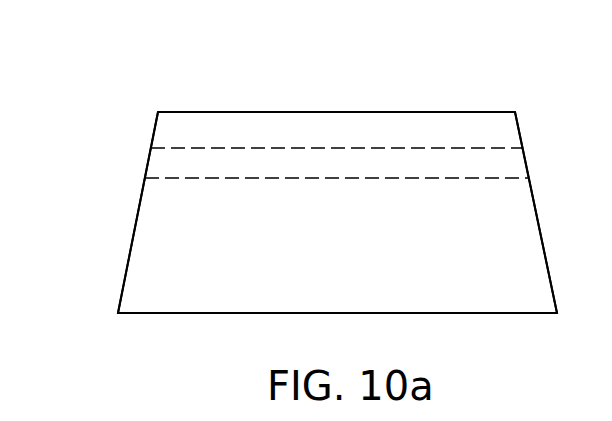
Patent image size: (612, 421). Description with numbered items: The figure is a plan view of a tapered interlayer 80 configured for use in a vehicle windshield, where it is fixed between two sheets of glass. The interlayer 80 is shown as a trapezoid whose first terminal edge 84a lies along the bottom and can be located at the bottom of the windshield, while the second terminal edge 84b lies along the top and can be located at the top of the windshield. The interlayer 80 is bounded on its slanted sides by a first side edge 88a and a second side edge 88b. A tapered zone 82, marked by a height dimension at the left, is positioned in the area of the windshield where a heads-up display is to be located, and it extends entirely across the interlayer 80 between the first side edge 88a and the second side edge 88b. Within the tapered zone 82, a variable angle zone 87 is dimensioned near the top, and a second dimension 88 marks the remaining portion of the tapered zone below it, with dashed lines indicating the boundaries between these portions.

The interlayer 80 is at (226, 77).
The tapered zone 82 is at (112, 313).
The first terminal edge 84a is at (442, 313).
The second terminal edge 84b is at (400, 112).
The variable angle zone 87 is at (30, 149).
The lower portion height 88 is at (142, 179).
The first side edge 88a is at (136, 223).
The second side edge 88b is at (539, 223).